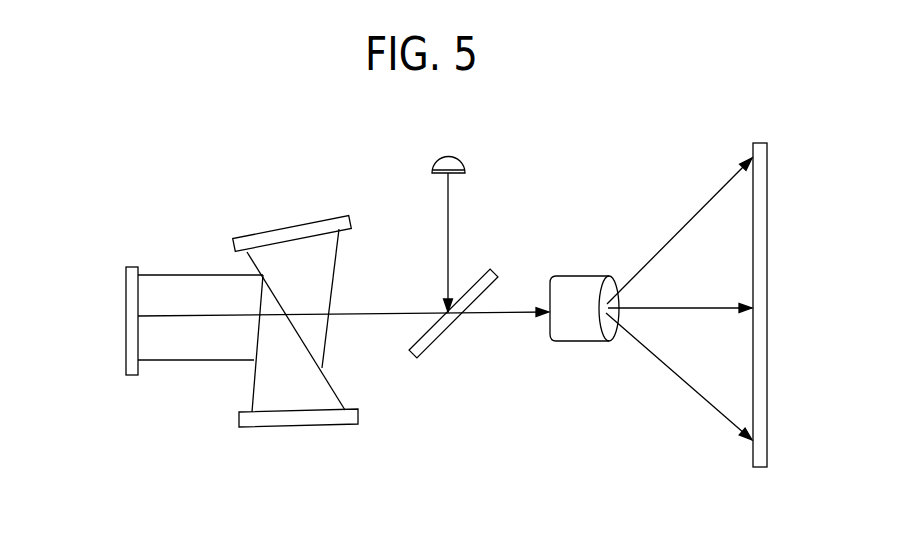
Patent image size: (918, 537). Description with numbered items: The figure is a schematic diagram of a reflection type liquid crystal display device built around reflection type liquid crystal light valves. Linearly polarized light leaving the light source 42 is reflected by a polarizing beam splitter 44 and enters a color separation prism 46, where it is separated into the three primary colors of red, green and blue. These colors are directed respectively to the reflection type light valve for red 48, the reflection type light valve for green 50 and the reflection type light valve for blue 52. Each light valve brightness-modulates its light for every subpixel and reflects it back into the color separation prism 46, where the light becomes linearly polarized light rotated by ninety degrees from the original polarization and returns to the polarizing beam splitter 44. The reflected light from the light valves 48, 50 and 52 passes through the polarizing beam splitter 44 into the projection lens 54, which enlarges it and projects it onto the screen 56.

The light source 42 is at (462, 163).
The polarizing beam splitter 44 is at (487, 273).
The color separation prism 46 is at (349, 368).
The reflection type light valve for red 48 is at (325, 218).
The reflection type light valve for green 50 is at (135, 267).
The reflection type light valve for blue 52 is at (328, 427).
The projection lens 54 is at (588, 277).
The screen 56 is at (752, 153).